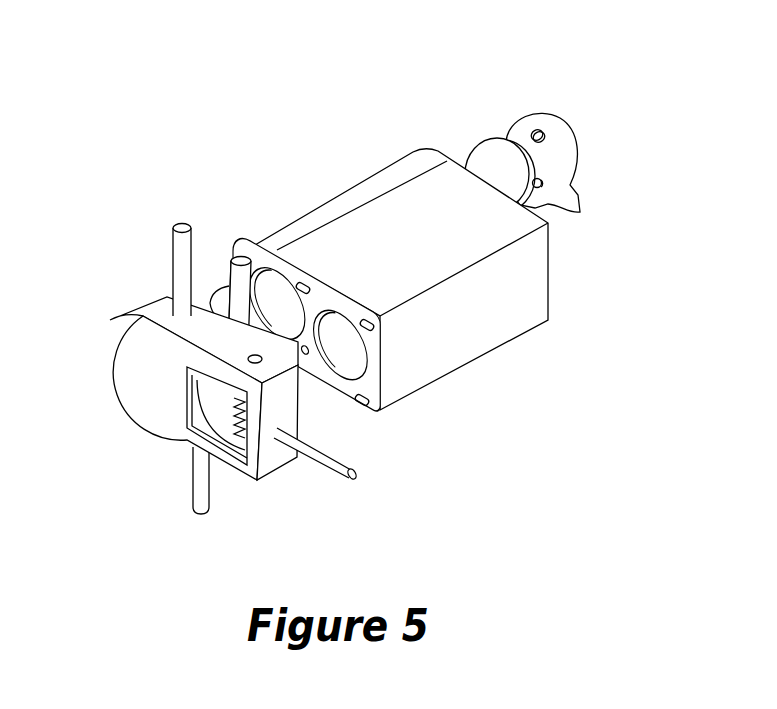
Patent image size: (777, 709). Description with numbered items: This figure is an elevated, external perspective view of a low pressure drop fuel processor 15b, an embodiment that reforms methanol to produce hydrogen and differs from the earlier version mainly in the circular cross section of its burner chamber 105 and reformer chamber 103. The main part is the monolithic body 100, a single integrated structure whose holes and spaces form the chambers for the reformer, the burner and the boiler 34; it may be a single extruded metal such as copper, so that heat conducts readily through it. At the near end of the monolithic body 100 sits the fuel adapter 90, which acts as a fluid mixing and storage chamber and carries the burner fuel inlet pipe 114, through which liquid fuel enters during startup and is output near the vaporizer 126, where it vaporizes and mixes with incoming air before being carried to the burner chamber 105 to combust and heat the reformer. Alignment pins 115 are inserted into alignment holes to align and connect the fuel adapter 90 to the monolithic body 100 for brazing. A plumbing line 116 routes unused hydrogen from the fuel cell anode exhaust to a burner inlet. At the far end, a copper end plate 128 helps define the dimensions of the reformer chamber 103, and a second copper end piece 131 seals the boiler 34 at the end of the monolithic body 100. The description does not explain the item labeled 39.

The low pressure drop fuel processor 15b is at (58, 52).
The copper end plate 128 is at (498, 173).
The post 39 is at (181, 226).
The plumbing line 116 is at (223, 300).
The reformer chamber 103 is at (268, 287).
The second copper end piece 131 is at (550, 162).
The fuel adapter 90 is at (132, 347).
The monolithic body 100 is at (480, 322).
The burner chamber 105 is at (355, 365).
The alignment pins 115 is at (358, 403).
The boiler 34 is at (306, 352).
The burner fuel inlet pipe 114 is at (356, 472).
The vaporizer 126 is at (236, 420).